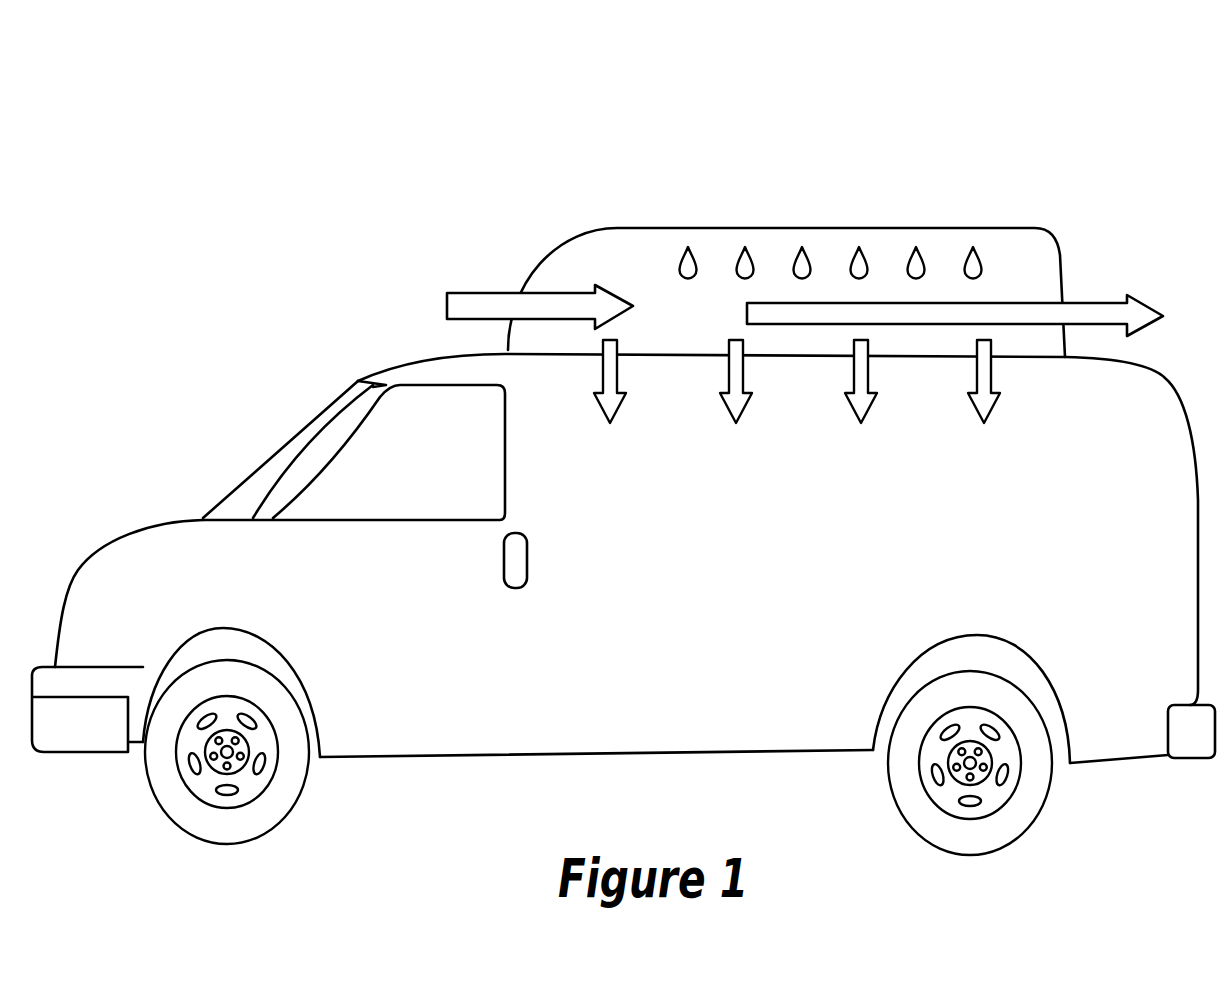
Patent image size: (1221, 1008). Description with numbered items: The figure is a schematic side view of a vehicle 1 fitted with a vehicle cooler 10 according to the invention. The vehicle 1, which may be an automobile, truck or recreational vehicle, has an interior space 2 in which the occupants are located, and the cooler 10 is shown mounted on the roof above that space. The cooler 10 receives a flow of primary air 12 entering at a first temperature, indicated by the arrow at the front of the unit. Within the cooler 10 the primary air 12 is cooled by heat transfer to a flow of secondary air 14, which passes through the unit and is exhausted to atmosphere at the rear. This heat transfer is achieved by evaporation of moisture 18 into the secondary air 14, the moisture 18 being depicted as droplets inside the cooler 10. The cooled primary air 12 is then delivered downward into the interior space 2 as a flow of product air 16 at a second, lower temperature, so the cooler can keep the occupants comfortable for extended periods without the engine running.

The vehicle 1 is at (803, 260).
The interior space 2 is at (778, 602).
The vehicle cooler 10 is at (612, 228).
The primary air 12 is at (508, 350).
The secondary air 14 is at (1100, 303).
The product air 16 is at (856, 410).
The moisture 18 is at (858, 245).